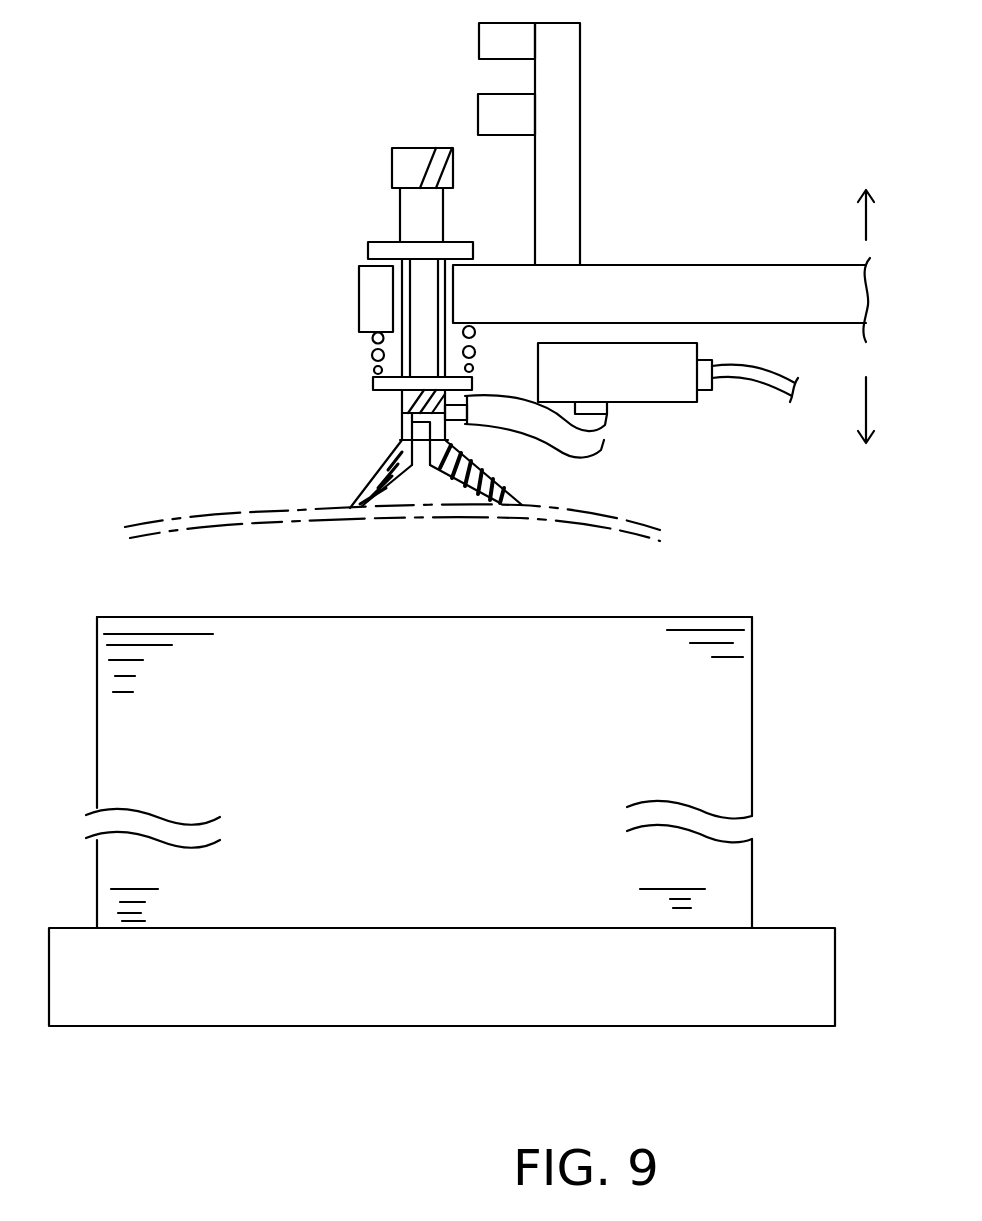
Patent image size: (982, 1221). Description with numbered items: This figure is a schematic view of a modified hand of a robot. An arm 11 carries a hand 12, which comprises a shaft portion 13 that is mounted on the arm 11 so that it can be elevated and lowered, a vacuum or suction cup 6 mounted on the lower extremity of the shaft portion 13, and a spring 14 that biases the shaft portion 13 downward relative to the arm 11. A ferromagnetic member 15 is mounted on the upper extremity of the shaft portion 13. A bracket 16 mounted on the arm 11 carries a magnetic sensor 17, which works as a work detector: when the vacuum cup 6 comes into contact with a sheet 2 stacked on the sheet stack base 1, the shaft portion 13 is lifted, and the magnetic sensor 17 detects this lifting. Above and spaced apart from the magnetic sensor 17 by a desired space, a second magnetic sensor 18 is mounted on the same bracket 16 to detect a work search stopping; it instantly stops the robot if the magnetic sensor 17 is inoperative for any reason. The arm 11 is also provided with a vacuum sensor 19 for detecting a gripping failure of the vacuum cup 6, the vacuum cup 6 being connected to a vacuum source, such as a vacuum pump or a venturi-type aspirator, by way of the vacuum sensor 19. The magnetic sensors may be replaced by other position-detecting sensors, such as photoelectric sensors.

The sheet stack base 1 is at (407, 1000).
The sheet 2 is at (735, 700).
The vacuum cup 6 is at (385, 470).
The arm 11 is at (763, 283).
The hand 12 is at (175, 282).
The shaft portion 13 is at (412, 300).
The spring 14 is at (372, 340).
The ferromagnetic member 15 is at (405, 168).
The bracket 16 is at (580, 175).
The magnetic sensor 17 is at (487, 115).
The second magnetic sensor 18 is at (491, 43).
The vacuum sensor 19 is at (672, 393).